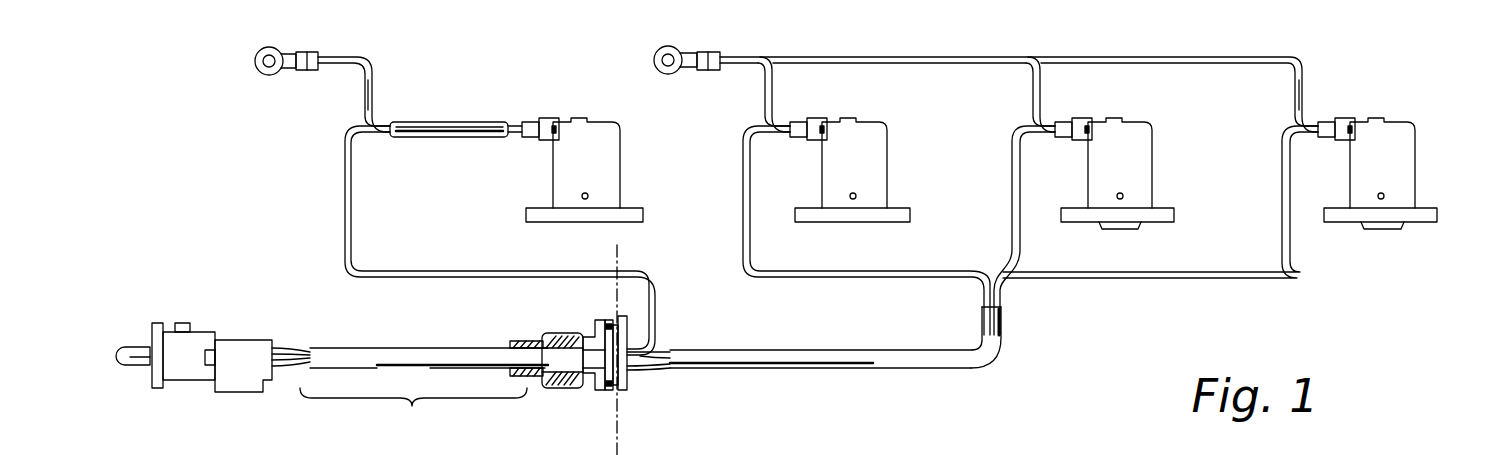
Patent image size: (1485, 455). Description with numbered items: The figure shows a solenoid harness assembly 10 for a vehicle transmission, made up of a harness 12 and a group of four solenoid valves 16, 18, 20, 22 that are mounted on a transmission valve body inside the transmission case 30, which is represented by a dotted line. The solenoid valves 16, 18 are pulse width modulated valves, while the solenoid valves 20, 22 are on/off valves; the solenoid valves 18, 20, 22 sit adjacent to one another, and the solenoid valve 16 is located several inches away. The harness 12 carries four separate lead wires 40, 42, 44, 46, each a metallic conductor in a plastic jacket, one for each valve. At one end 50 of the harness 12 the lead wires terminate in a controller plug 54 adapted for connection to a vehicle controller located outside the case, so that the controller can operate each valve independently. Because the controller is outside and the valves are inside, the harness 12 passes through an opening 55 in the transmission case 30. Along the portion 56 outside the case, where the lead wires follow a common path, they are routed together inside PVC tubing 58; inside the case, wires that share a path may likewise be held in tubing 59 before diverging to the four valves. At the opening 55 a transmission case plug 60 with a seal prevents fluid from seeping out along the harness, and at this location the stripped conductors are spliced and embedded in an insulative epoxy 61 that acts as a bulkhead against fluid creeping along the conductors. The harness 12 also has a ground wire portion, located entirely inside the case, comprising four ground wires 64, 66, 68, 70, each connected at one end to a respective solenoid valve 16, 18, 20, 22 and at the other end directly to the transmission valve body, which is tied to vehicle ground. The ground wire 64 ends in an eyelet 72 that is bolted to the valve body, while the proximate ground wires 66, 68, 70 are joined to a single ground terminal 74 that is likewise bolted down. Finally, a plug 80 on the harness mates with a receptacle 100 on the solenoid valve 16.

The solenoid harness assembly 10 is at (877, 377).
The harness portion 12 is at (806, 386).
The solenoid valve 16 is at (621, 157).
The solenoid valve 18 is at (888, 152).
The solenoid valve 20 is at (1153, 152).
The solenoid valve 22 is at (1415, 165).
The transmission case 30 is at (618, 418).
The lead wire 40 is at (345, 200).
The lead wire 42 is at (743, 212).
The lead wire 44 is at (1012, 212).
The lead wire 46 is at (1272, 282).
The end of the harness 50 is at (232, 358).
The controller plug 54 is at (190, 322).
The opening 55 is at (620, 395).
The harness portion outside the transmission case 56 is at (413, 417).
The PVC tubing 58 is at (455, 347).
The tubing 59 is at (985, 362).
The transmission case plug 60 is at (587, 392).
The insulative epoxy 61 is at (565, 335).
The ground wire 64 is at (373, 88).
The ground wire 66 is at (765, 105).
The ground wire 68 is at (1030, 101).
The ground wire 70 is at (1292, 97).
The eyelet 72 is at (270, 76).
The ground terminal 74 is at (662, 76).
The plug 80 is at (547, 118).
The receptacle 100 is at (545, 145).